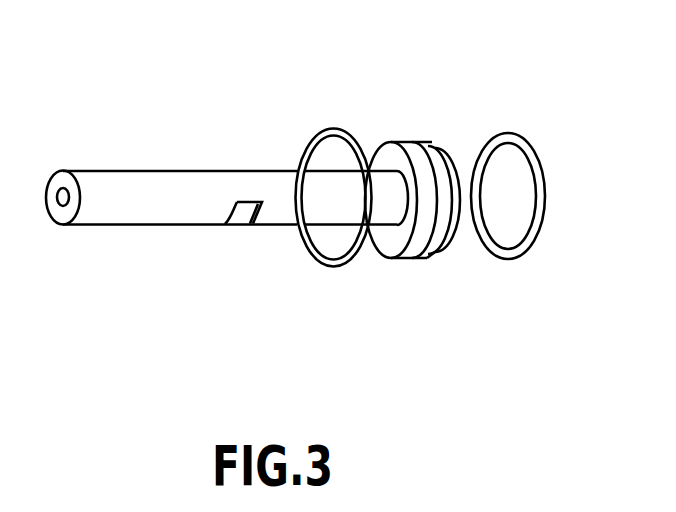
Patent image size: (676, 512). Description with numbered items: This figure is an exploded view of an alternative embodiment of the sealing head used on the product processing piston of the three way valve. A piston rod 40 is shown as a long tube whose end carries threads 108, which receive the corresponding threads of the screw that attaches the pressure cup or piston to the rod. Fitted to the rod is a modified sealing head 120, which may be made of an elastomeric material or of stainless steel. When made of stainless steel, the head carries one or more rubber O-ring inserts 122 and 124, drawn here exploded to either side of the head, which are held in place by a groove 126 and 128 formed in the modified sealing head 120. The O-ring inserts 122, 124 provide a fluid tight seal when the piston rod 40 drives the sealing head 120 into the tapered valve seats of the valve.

The piston rod 40 is at (158, 202).
The threads 108 is at (61, 191).
The modified sealing head 120 is at (421, 257).
The rubber O-ring insert 122 is at (318, 129).
The rubber O-ring insert 124 is at (536, 238).
The groove 126 is at (402, 143).
The groove 128 is at (462, 230).